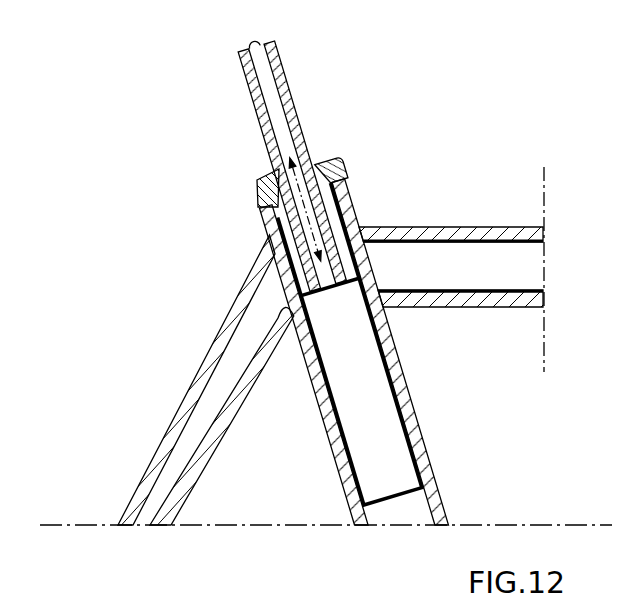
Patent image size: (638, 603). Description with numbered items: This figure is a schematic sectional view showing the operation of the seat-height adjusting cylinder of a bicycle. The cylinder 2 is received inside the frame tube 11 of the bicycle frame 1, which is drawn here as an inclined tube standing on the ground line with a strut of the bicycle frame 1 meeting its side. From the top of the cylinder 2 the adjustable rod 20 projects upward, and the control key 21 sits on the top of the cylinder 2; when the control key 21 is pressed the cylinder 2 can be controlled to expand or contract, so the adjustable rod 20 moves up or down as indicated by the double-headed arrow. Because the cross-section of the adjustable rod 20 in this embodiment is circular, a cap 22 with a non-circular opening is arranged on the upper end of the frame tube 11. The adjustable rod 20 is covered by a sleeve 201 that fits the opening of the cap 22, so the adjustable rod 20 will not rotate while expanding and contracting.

The bicycle frame 1 is at (195, 380).
The cylinder 2 is at (376, 365).
The frame tube 11 is at (399, 343).
The adjustable rod 20 is at (297, 166).
The sleeve 201 is at (349, 162).
The control key 21 is at (252, 43).
The cap 22 is at (352, 162).